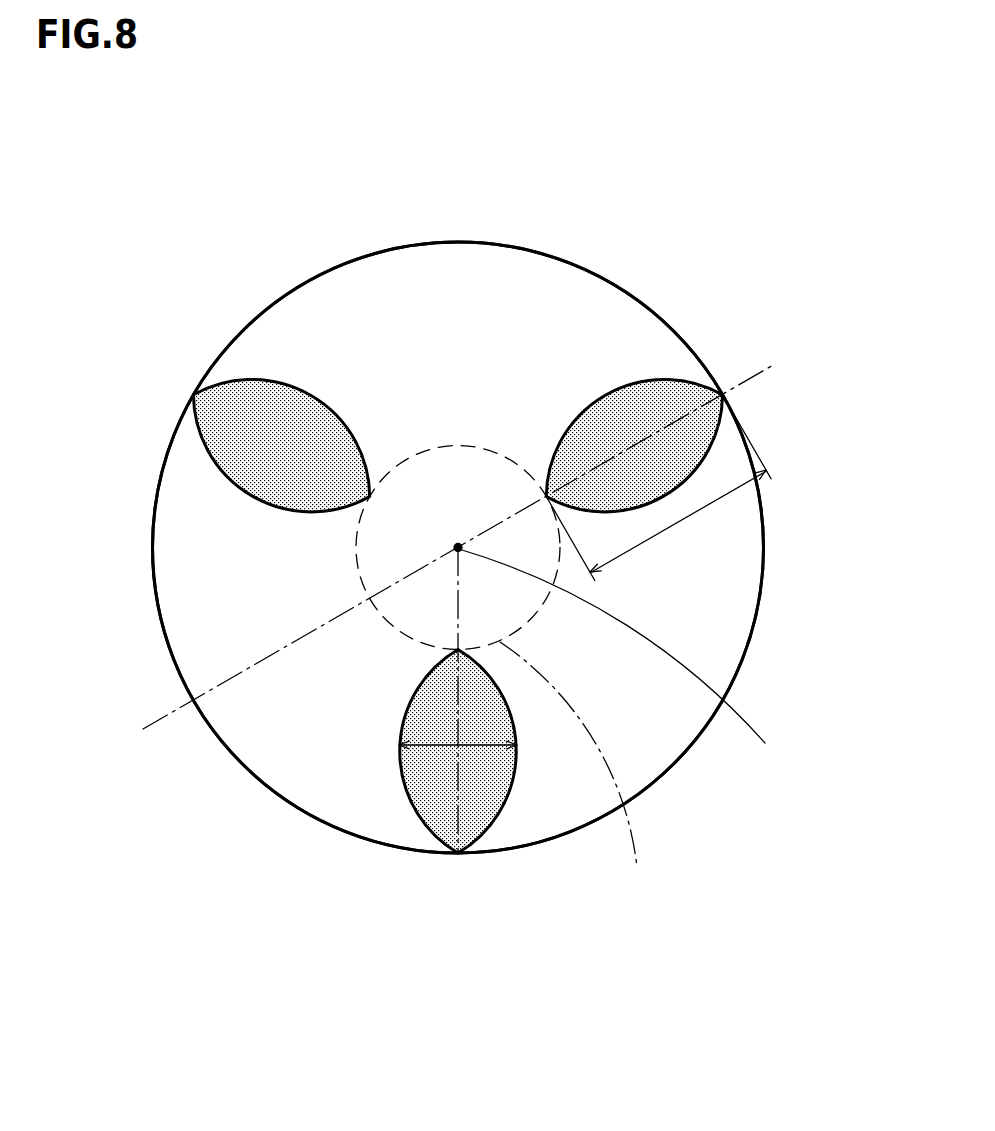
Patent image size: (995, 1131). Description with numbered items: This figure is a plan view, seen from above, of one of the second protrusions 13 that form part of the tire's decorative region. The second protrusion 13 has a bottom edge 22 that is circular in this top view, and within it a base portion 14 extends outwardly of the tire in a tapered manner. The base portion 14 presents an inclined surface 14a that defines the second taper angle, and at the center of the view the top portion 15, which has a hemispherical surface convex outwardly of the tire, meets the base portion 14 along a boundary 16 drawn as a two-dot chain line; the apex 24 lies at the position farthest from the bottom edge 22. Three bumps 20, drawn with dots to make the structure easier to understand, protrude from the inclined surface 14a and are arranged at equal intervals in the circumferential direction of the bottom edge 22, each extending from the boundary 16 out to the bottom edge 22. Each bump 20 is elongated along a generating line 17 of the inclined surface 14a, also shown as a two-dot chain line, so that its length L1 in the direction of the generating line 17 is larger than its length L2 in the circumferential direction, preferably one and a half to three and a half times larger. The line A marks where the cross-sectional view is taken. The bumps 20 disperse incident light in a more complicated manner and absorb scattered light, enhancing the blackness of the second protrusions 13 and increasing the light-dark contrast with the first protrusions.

The second protrusion 13 is at (238, 287).
The base portion 14 is at (552, 315).
The inclined surface 14a is at (707, 603).
The top portion 15 is at (454, 503).
The boundary 16 is at (577, 774).
The generating line 17 is at (458, 815).
The bump 20 is at (645, 408).
The bottom edge 22 is at (153, 590).
The apex 24 is at (631, 663).
The length of the bump in the direction of the generating line L1 is at (710, 508).
The length of the bump in the circumferential direction L2 is at (437, 752).
The line A- A is at (461, 550).